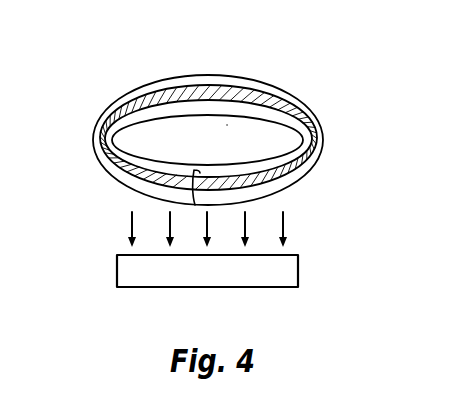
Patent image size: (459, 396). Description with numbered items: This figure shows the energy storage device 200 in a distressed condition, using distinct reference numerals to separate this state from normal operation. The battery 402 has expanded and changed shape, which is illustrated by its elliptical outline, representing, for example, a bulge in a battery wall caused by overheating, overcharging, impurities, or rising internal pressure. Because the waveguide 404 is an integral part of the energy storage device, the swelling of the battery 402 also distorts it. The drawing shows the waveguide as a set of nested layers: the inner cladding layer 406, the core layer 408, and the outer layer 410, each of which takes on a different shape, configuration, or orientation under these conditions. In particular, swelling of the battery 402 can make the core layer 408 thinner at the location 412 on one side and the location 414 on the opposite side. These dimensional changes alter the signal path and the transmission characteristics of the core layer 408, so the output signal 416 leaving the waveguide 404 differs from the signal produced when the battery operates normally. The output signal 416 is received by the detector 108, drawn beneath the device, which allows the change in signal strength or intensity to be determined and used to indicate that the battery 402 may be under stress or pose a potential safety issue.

The energy storage device 200 is at (152, 60).
The battery 402 is at (227, 125).
The inner cladding layer 406 is at (267, 111).
The core layer 408 is at (300, 118).
The location 414 is at (316, 141).
The outer layer 410 is at (301, 169).
The location 412 is at (101, 142).
The waveguide 404 is at (191, 187).
The output signal 416 is at (306, 227).
The detector 108 is at (298, 272).